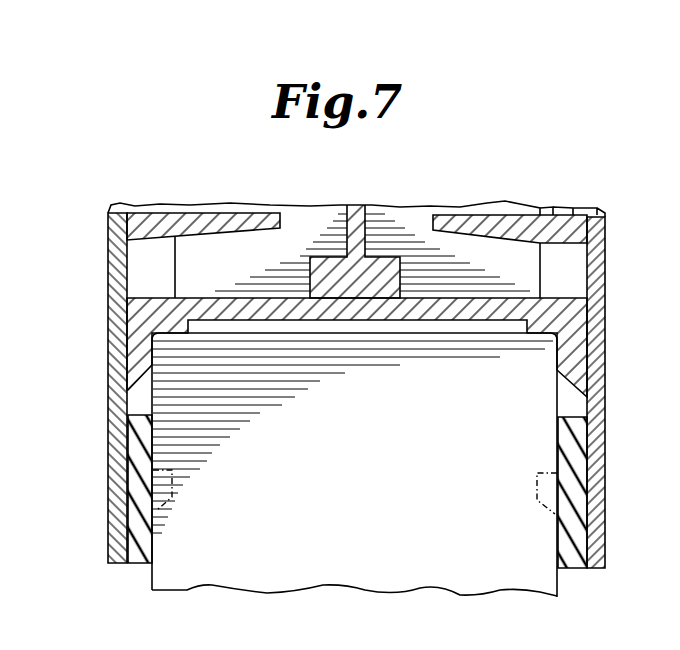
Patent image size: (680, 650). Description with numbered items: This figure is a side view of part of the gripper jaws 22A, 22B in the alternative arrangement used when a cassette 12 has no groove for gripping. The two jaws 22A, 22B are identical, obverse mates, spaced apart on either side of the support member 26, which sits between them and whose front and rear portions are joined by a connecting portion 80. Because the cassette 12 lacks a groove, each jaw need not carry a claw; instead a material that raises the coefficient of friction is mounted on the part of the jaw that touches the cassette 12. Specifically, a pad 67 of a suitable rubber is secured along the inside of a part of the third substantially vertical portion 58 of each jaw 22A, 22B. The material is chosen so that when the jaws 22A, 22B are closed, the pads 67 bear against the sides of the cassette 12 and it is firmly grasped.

The cassette 12 is at (354, 465).
The jaw 22A is at (101, 246).
The jaw 22B is at (614, 209).
The support member 26 is at (558, 300).
The third substantially vertical portion 58 is at (115, 358).
The pad 67 is at (577, 558).
The connecting portion 80 is at (367, 223).